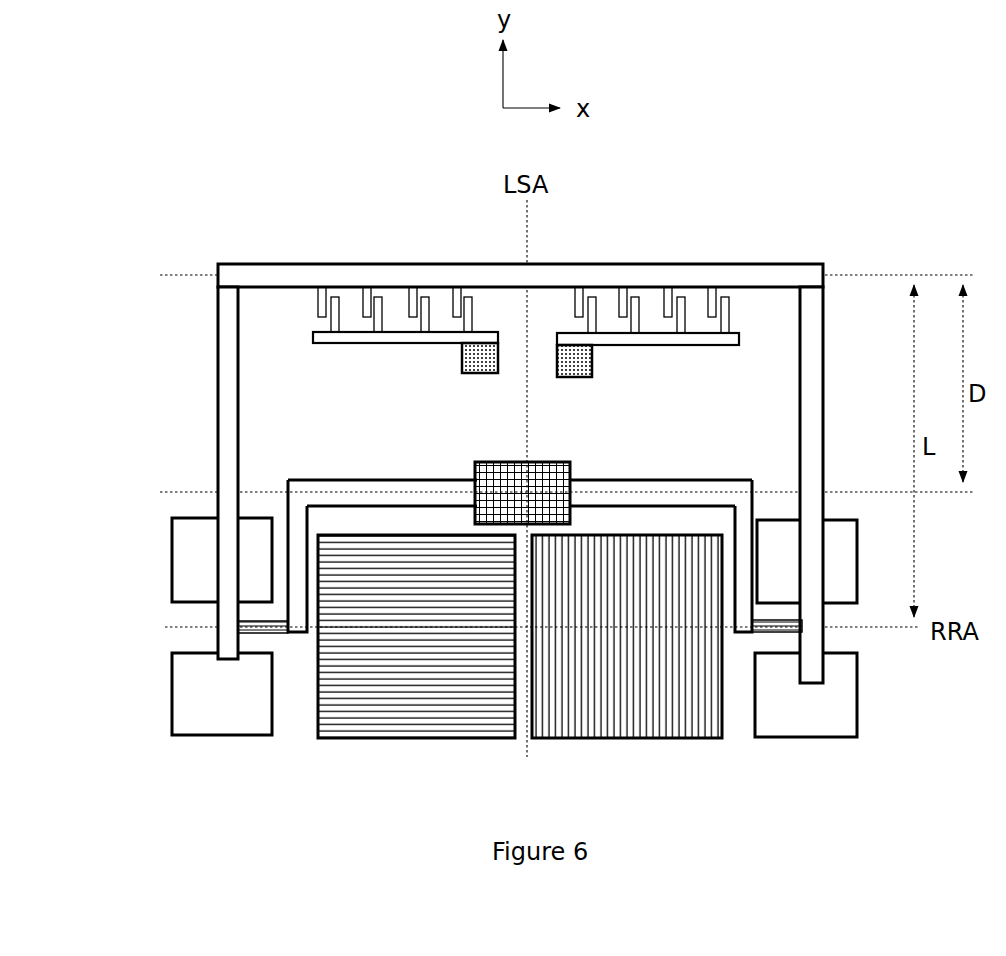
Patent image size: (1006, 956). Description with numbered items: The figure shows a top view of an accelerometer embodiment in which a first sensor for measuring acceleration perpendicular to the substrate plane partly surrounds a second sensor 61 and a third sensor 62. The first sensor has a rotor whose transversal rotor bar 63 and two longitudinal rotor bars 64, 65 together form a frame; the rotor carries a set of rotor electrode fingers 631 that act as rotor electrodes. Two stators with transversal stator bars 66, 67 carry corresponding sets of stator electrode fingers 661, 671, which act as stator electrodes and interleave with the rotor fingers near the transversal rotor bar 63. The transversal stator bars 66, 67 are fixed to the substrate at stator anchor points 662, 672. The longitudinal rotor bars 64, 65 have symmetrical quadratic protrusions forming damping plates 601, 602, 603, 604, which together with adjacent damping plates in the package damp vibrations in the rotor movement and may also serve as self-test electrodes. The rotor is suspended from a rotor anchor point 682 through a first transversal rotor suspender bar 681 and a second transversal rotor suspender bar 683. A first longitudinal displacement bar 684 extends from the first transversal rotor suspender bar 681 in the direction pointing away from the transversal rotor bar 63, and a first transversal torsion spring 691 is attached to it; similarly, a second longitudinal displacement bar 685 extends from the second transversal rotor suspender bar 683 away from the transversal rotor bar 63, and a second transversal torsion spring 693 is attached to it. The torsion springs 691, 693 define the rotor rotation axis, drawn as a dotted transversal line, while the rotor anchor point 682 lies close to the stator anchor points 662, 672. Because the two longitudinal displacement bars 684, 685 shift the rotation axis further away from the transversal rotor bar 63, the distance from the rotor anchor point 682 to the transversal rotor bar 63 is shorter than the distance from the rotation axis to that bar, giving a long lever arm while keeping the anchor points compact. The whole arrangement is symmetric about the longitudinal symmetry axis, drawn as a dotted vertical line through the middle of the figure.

The second sensor 61 is at (648, 662).
The third sensor 62 is at (363, 662).
The transversal rotor bar 63 is at (767, 278).
The longitudinal rotor bar 64 is at (222, 313).
The longitudinal rotor bar 65 is at (810, 353).
The transversal stator bar 66 is at (633, 340).
The transversal stator bar 67 is at (388, 332).
The rotor electrode fingers 631 is at (322, 298).
The stator electrode fingers 661 is at (728, 308).
The stator anchor point 662 is at (580, 368).
The stator electrode fingers 671 is at (468, 320).
The stator anchor point 672 is at (478, 362).
The first transversal rotor suspender bar 681 is at (657, 492).
The rotor anchor point 682 is at (507, 493).
The second transversal rotor suspender bar 683 is at (397, 497).
The first longitudinal displacement bar 684 is at (745, 553).
The second longitudinal displacement bar 685 is at (295, 553).
The first transversal torsion spring 691 is at (780, 630).
The second transversal torsion spring 693 is at (262, 630).
The damping plate 601 is at (205, 558).
The damping plate 602 is at (198, 693).
The damping plate 603 is at (810, 568).
The damping plate 604 is at (813, 710).